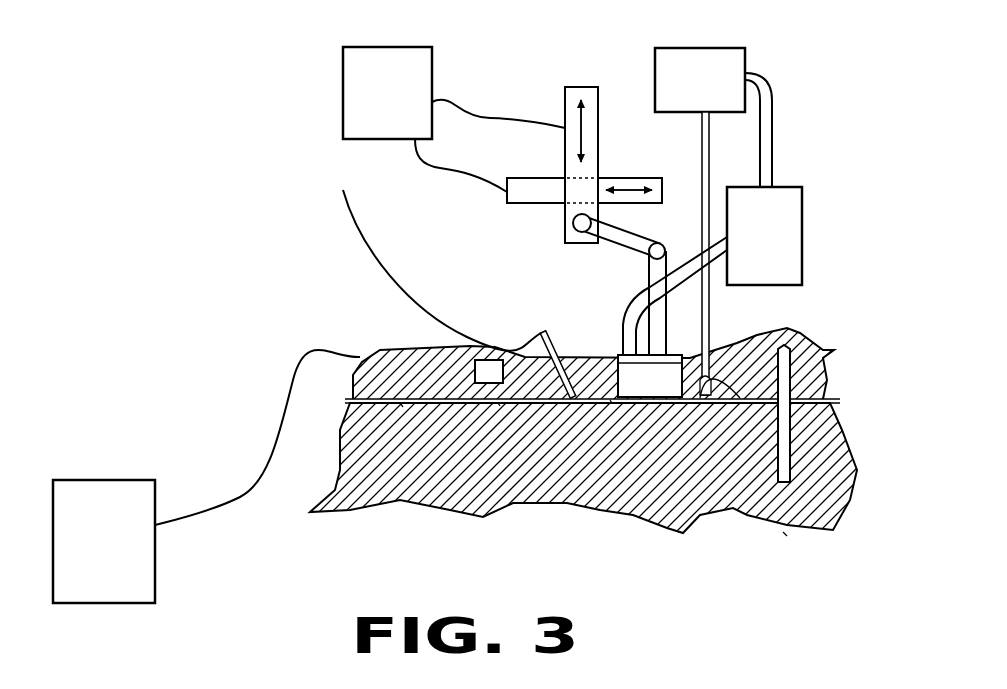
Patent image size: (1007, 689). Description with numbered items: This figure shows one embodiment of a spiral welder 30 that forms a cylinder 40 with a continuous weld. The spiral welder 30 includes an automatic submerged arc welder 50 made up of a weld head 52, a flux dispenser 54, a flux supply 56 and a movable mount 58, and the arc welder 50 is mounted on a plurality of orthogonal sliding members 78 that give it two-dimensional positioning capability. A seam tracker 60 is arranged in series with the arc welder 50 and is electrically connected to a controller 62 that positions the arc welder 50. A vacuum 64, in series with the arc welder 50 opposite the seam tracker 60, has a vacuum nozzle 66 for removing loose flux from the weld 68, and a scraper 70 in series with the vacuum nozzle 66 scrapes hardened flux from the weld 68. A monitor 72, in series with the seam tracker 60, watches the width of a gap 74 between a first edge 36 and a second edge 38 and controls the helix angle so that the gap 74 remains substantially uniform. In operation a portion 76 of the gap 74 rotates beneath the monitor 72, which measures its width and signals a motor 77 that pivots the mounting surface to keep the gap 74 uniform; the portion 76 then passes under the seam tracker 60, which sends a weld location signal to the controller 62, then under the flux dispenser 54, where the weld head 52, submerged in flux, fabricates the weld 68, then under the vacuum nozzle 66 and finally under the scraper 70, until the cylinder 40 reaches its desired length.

The spiral welder 30 is at (283, 343).
The first edge 36 is at (372, 352).
The second edge 38 is at (403, 406).
The cylinder 40 is at (785, 542).
The automatic submerged arc welder 50 is at (618, 358).
The weld head 52 is at (619, 400).
The flux dispenser 54 is at (612, 402).
The flux supply 56 is at (803, 250).
The movable mount 58 is at (583, 66).
The seam tracker 60 is at (500, 405).
The controller 62 is at (454, 119).
The vacuum 64 is at (713, 117).
The vacuum nozzle 66 is at (738, 347).
The weld 68 is at (740, 405).
The scraper 70 is at (817, 443).
The monitor 72 is at (489, 371).
The gap 74 is at (336, 396).
The portion of gap 76 is at (425, 406).
The motor 77 is at (206, 476).
The orthogonal sliding members 78 is at (600, 122).